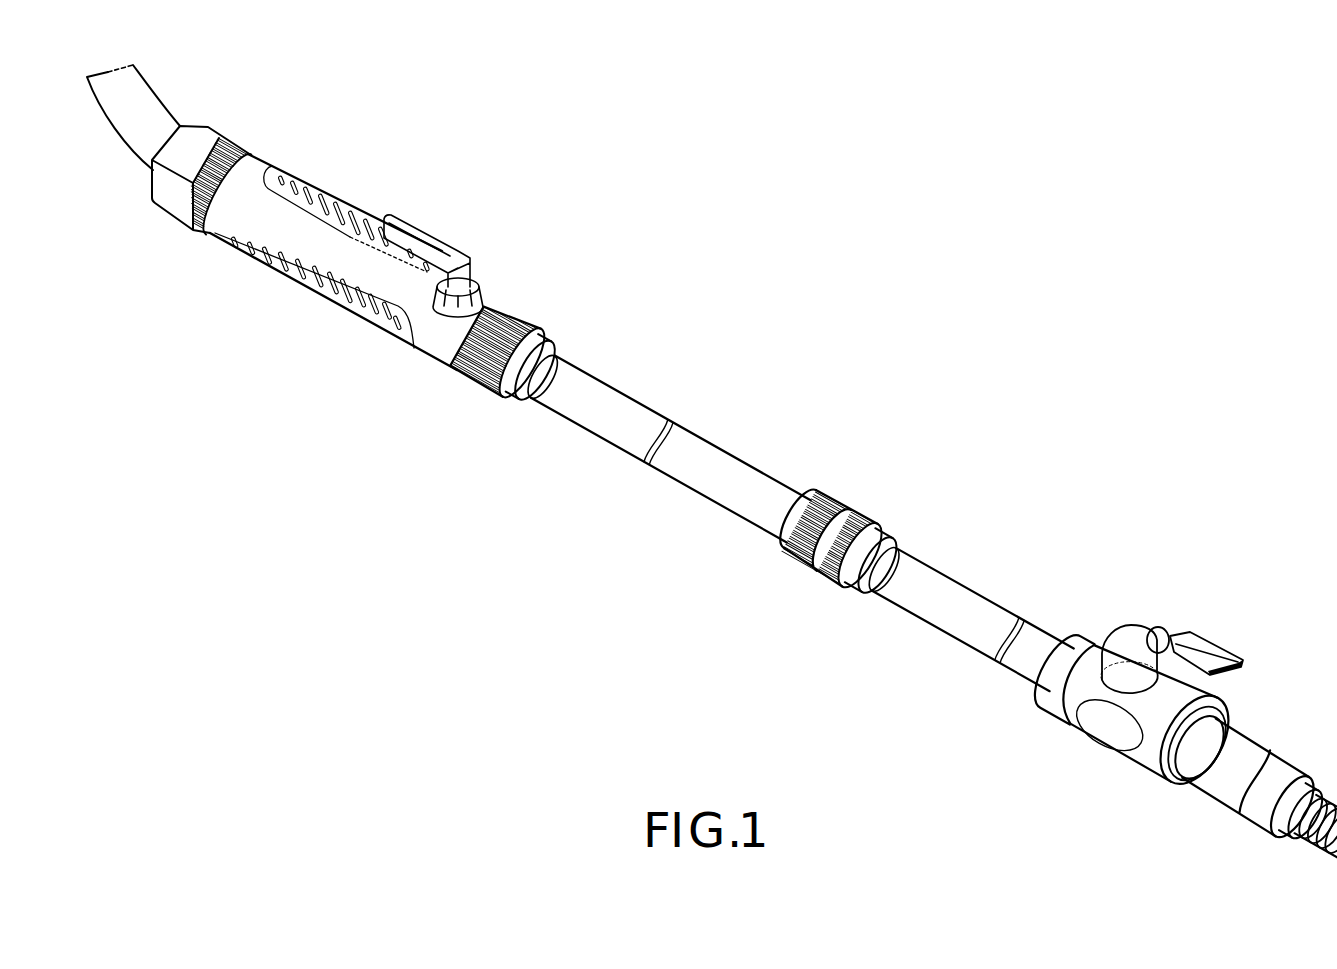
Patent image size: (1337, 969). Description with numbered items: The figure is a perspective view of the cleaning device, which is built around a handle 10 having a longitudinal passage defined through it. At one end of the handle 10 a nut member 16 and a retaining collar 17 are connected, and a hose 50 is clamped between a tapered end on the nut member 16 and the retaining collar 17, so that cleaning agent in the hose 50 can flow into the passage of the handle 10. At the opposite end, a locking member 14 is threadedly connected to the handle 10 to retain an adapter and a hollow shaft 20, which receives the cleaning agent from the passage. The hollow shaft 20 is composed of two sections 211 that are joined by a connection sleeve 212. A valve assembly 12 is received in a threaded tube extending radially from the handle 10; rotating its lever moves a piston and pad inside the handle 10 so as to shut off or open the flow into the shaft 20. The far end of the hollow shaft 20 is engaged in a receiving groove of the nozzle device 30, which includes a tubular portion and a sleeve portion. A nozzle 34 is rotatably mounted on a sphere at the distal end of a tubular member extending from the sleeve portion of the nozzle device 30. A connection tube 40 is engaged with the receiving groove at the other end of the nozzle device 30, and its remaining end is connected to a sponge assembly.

The handle 10 is at (350, 333).
The valve assembly 12 is at (489, 267).
The locking member 14 is at (535, 331).
The nut member 16 is at (251, 157).
The retaining collar 17 is at (173, 205).
The hollow shaft 20 is at (673, 497).
The sections 211 is at (600, 428).
The connection sleeve 212 is at (877, 528).
The nozzle device 30 is at (1067, 751).
The nozzle 34 is at (1210, 653).
The connection tube 40 is at (1268, 745).
The hose 50 is at (160, 117).